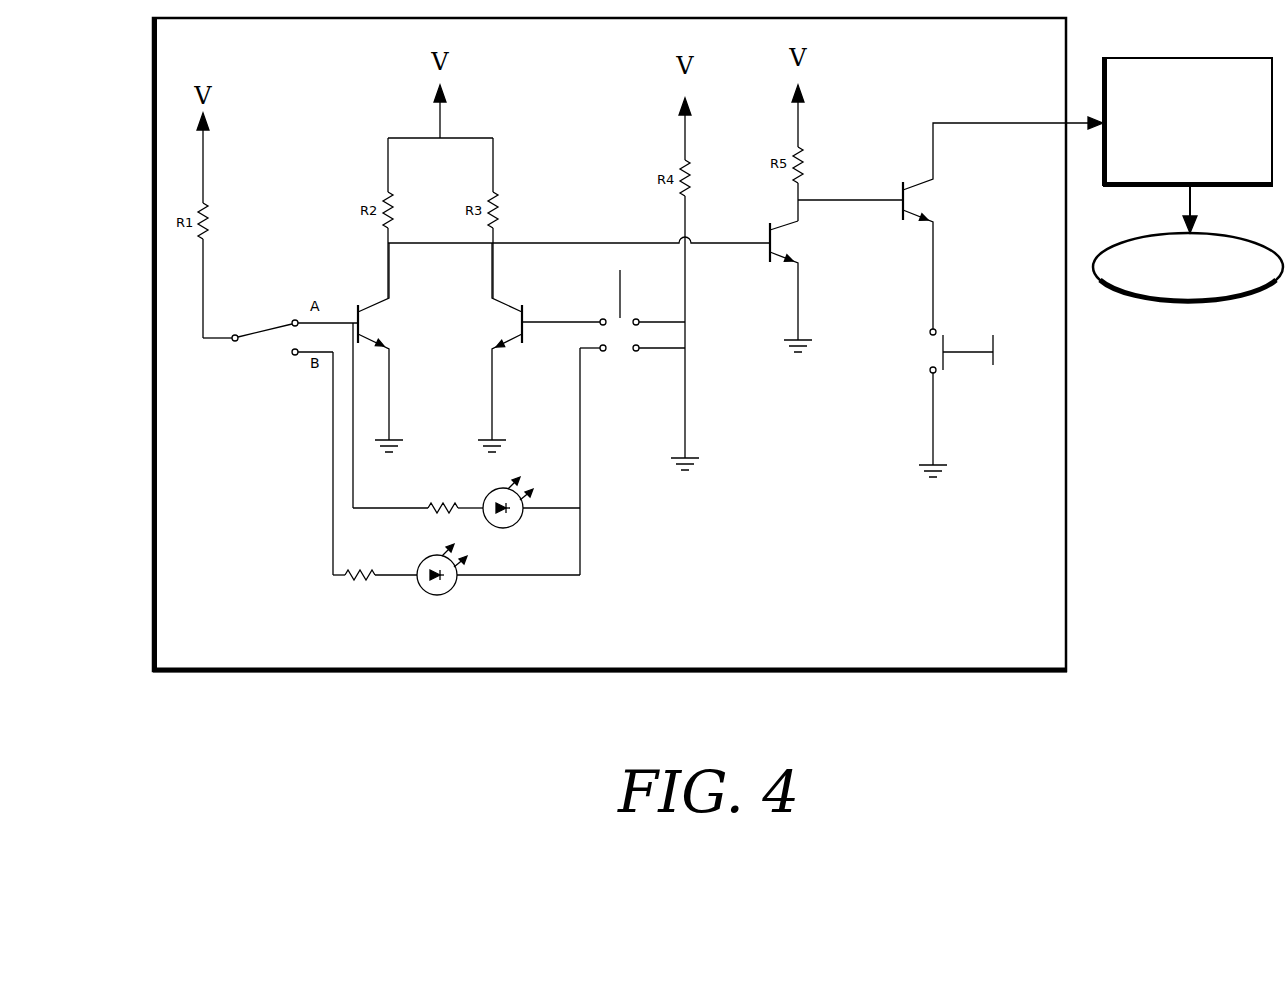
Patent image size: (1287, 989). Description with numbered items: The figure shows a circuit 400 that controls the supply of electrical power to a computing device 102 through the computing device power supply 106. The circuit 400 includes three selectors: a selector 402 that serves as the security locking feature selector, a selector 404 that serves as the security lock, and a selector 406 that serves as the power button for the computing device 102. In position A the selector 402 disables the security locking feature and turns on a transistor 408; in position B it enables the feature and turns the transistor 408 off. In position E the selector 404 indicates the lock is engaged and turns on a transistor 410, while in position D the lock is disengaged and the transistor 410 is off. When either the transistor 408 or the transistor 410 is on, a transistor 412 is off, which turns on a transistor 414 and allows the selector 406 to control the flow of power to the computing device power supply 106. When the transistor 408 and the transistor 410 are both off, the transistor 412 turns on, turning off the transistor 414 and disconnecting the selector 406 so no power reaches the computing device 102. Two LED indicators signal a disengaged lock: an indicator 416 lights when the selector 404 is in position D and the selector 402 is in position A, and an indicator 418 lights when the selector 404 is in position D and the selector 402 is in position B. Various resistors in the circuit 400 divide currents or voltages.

The circuit 400 is at (610, 345).
The selector 402 is at (262, 339).
The selector 404 is at (619, 304).
The selector 406 is at (967, 352).
The transistor 408 is at (363, 321).
The transistor 410 is at (517, 323).
The transistor 412 is at (775, 245).
The transistor 414 is at (907, 203).
The indicator 416 is at (522, 520).
The indicator 418 is at (456, 588).
The computing device power supply 106 is at (1188, 122).
The computing device 102 is at (1188, 267).